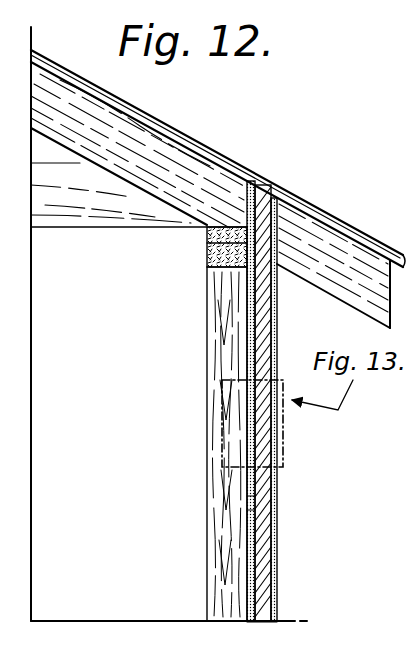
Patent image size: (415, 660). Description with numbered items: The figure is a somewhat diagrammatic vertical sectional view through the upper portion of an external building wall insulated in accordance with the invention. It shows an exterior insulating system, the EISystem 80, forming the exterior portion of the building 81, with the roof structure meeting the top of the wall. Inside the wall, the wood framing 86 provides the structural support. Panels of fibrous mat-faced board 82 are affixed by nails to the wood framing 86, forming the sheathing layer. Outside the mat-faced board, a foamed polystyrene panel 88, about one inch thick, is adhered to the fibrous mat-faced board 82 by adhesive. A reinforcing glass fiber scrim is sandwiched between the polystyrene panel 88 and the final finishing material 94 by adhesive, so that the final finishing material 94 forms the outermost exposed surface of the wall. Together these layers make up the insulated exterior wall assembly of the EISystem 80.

The EISystem 80 is at (286, 498).
The building 81 is at (272, 355).
The fibrous mat-faced board 82 is at (250, 503).
The wood framing 86 is at (212, 320).
The foamed polystyrene panel 88 is at (262, 528).
The final finishing material 94 is at (273, 583).